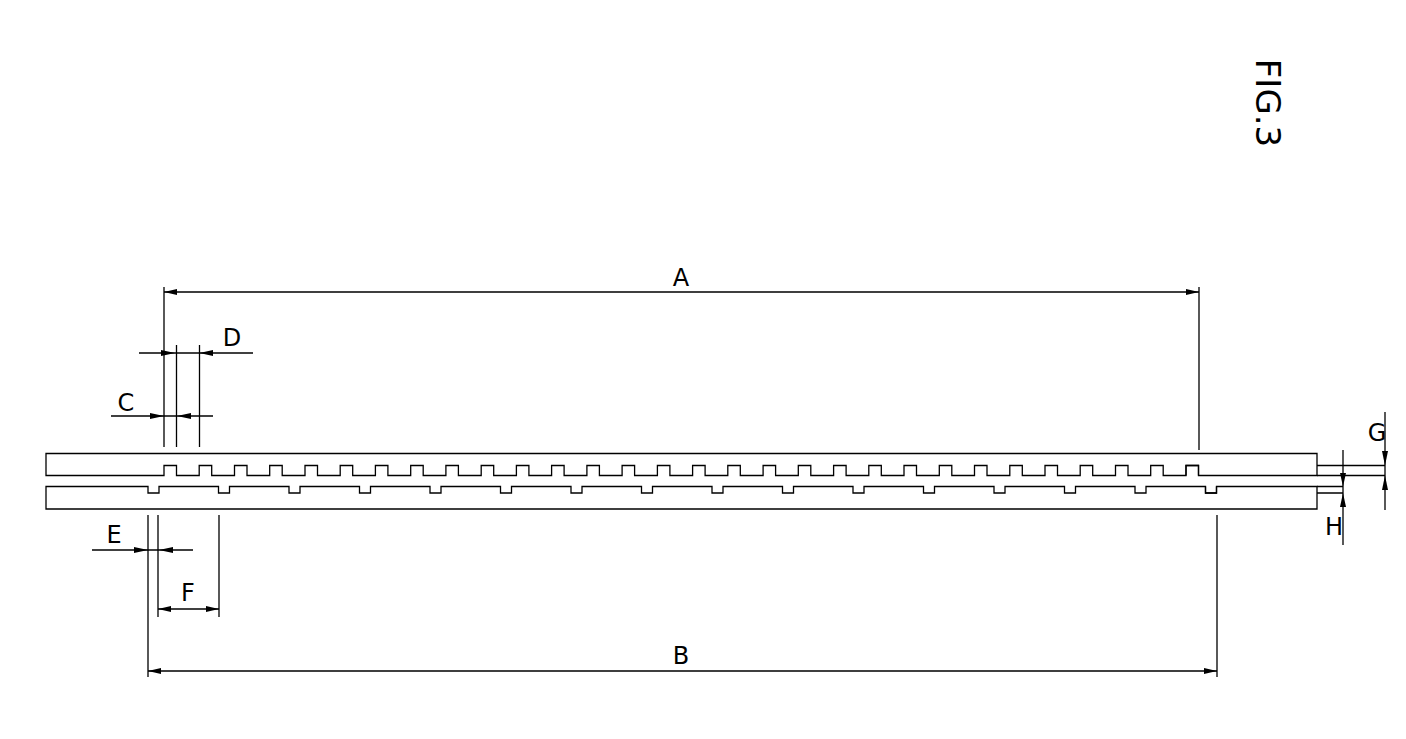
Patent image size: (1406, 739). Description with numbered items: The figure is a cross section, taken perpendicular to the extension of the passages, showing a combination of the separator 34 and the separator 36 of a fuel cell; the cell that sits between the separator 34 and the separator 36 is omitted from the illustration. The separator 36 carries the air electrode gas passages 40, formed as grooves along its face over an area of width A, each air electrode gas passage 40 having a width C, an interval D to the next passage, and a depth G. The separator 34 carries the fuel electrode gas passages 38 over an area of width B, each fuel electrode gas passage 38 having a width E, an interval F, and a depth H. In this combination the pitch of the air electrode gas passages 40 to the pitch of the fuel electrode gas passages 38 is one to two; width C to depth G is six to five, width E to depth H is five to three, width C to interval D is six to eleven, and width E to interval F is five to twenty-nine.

The separator 34 is at (78, 502).
The separator 36 is at (78, 462).
The fuel electrode gas passages 38 is at (1211, 491).
The air electrode gas passages 40 is at (1192, 470).